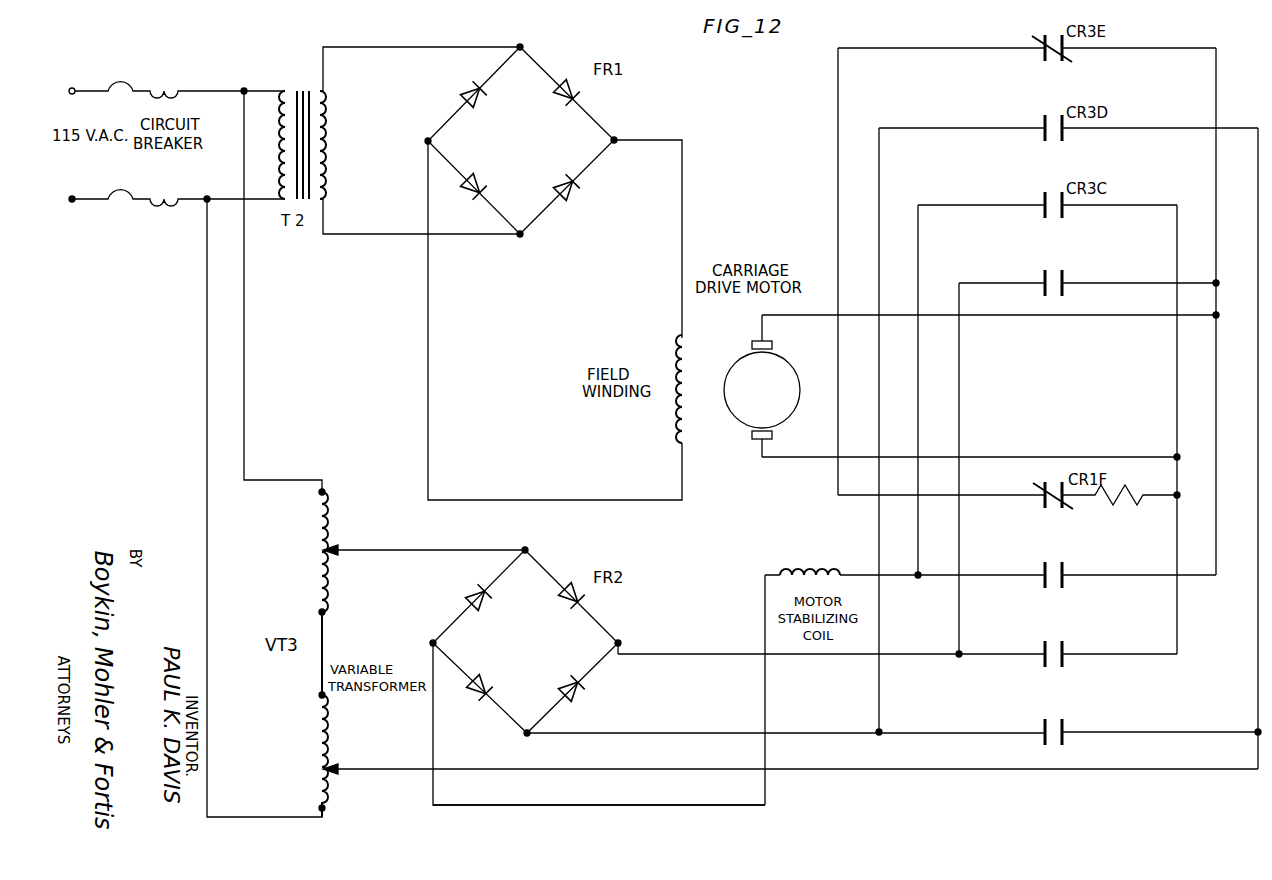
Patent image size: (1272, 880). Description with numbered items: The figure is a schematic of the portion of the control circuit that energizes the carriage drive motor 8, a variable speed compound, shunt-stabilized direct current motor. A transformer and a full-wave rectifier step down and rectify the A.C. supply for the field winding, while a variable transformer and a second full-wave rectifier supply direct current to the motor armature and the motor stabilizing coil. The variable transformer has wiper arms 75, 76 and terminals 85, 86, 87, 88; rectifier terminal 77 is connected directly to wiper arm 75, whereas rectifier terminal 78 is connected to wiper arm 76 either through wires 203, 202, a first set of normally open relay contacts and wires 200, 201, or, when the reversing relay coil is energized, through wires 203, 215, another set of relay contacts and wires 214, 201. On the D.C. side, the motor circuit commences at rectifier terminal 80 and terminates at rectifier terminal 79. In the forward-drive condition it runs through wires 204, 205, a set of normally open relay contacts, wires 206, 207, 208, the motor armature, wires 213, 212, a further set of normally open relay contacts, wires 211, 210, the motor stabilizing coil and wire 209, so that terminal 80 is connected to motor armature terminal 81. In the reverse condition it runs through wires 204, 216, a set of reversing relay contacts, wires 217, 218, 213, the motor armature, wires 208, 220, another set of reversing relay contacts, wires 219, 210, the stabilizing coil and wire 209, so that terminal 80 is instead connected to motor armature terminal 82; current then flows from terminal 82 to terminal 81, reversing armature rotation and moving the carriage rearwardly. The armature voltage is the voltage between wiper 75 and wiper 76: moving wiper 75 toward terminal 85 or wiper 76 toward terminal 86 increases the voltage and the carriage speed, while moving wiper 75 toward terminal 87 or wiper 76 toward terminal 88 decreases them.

The carriage drive motor 8 is at (703, 352).
The motor armature terminal 81 is at (772, 436).
The motor armature terminal 82 is at (778, 333).
The wiper arm 75 is at (424, 541).
The wiper arm 76 is at (511, 761).
The rectifier terminal 77 is at (524, 540).
The rectifier terminal 78 is at (527, 744).
The rectifier terminal 79 is at (426, 634).
The rectifier terminal 80 is at (628, 636).
The transformer terminal 85 is at (333, 495).
The transformer terminal 86 is at (334, 812).
The transformer terminal 87 is at (310, 614).
The transformer terminal 88 is at (310, 697).
The wire 200 is at (1086, 731).
The wire 201 is at (845, 768).
The wire 202 is at (908, 731).
The wire 203 is at (627, 732).
The wire 204 is at (794, 652).
The wire 205 is at (973, 653).
The wire 206 is at (1110, 653).
The wire 207 is at (1174, 479).
The wire 208 is at (970, 452).
The wire 209 is at (620, 804).
The wire 210 is at (858, 574).
The wire 211 is at (970, 574).
The wire 212 is at (1105, 574).
The wire 213 is at (1076, 314).
The wire 214 is at (1258, 475).
The wire 215 is at (879, 370).
The wire 216 is at (959, 370).
The wire 217 is at (1091, 282).
The wire 218 is at (1215, 294).
The wire 219 is at (918, 335).
The wire 220 is at (1175, 393).